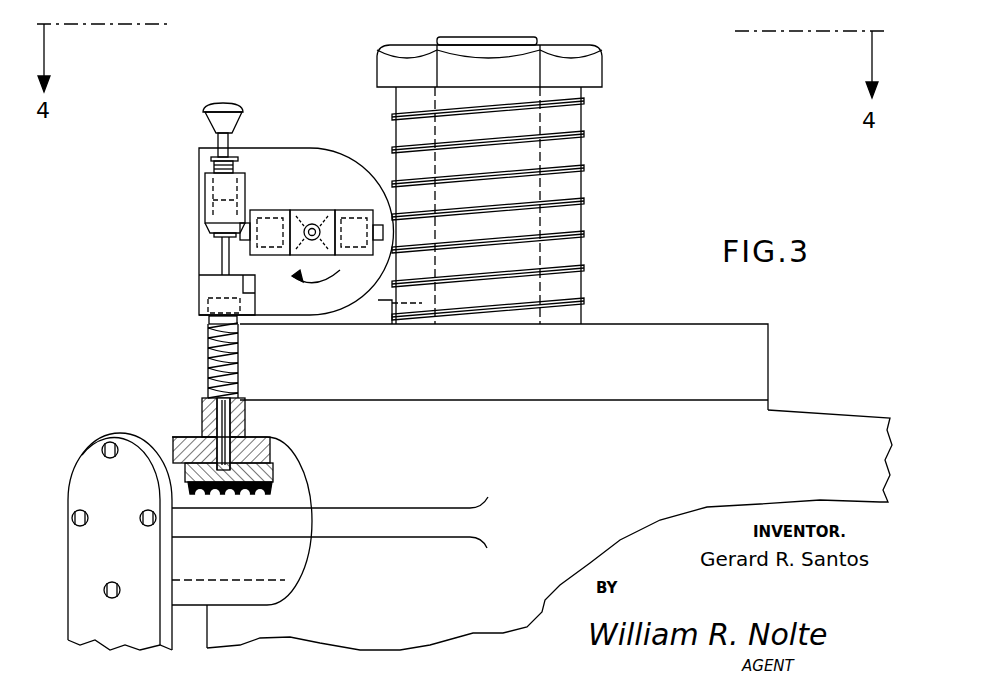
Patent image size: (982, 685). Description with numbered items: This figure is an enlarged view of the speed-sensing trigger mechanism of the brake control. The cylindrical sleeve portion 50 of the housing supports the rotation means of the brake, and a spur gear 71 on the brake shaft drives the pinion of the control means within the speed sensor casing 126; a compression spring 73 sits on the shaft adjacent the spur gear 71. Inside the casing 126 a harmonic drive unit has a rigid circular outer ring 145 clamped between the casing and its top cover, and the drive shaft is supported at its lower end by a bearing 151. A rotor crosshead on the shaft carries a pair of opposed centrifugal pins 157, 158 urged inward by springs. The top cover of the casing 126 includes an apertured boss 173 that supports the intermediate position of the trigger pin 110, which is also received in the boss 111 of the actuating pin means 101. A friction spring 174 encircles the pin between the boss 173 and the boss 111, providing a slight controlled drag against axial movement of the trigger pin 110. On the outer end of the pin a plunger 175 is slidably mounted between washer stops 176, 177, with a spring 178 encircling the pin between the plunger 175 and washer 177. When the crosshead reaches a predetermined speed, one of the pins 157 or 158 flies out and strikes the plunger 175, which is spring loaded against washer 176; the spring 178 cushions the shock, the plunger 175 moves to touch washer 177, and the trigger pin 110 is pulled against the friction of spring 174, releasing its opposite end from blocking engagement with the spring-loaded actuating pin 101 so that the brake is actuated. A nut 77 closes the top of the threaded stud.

The nut 77 is at (582, 66).
The compression spring 73 is at (585, 120).
The rigid circular outer ring 145 is at (282, 148).
The casing 126 is at (385, 316).
The centrifugal pin 158 is at (265, 210).
The bearing 151 is at (318, 212).
The centrifugal pin 157 is at (378, 225).
The washer stop 177 is at (220, 150).
The spring 178 is at (214, 163).
The plunger 175 is at (212, 200).
The washer stop 176 is at (214, 236).
The trigger pin 110 is at (222, 262).
The apertured boss 173 is at (200, 297).
The friction spring 174 is at (208, 360).
The spur gear 71 is at (340, 366).
The boss 111 is at (202, 420).
The actuating pin means 101 is at (270, 470).
The cylindrical sleeve portion 50 is at (550, 446).